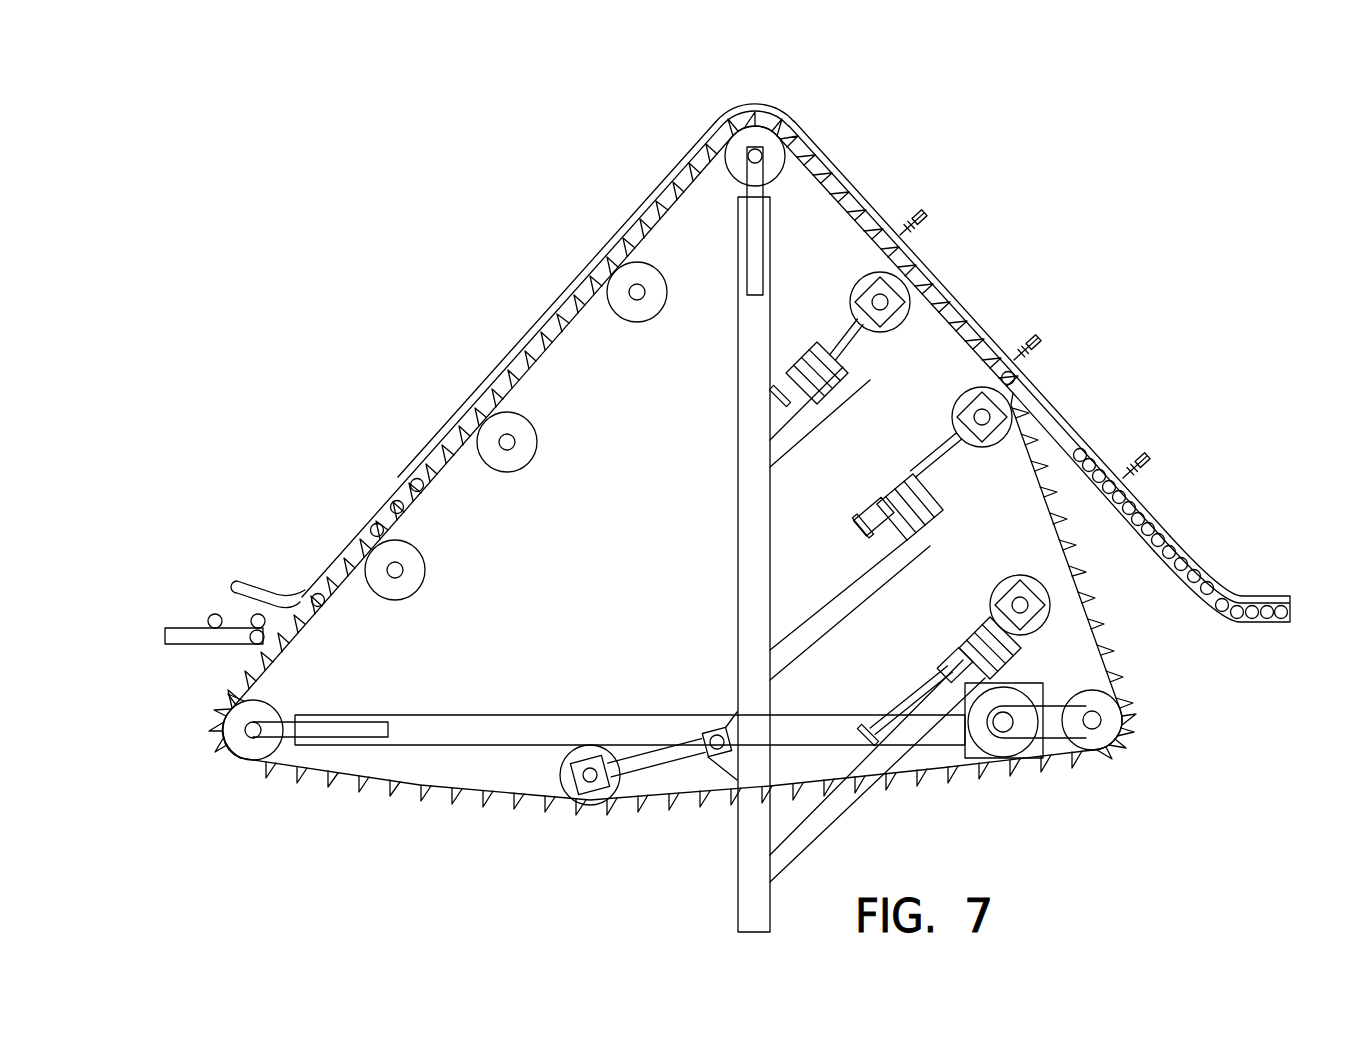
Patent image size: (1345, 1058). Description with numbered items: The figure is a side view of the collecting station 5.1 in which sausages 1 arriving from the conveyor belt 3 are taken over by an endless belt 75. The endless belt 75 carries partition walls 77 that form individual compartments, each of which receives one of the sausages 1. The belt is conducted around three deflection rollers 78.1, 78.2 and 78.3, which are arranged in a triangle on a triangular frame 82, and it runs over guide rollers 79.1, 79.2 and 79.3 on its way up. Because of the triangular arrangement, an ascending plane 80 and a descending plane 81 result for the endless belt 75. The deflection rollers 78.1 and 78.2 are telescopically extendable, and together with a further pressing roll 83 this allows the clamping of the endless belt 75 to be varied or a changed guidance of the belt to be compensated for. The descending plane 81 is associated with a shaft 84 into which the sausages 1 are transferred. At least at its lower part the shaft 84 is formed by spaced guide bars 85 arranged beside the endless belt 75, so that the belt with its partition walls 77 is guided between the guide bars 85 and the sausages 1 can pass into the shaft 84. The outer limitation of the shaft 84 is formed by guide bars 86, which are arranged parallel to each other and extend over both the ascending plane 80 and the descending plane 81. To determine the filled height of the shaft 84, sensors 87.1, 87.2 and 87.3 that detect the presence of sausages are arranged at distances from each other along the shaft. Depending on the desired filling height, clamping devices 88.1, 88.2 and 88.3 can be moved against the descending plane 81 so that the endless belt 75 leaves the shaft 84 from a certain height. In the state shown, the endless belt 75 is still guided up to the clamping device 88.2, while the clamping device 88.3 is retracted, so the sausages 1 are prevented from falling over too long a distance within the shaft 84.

The sausages 1 is at (305, 597).
The conveyor belt 3 is at (222, 648).
The collecting station 5.1 is at (1008, 278).
The endless belt 75 is at (432, 800).
The partition walls 77 is at (342, 776).
The deflection roller 78.1 is at (265, 722).
The deflection roller 78.2 is at (740, 163).
The deflection roller 78.3 is at (1122, 708).
The guide roller 79.1 is at (428, 572).
The guide roller 79.2 is at (540, 443).
The guide roller 79.3 is at (637, 323).
The ascending plane 80 is at (496, 486).
The descending plane 81 is at (888, 462).
The triangular frame 82 is at (724, 653).
The pressing roll 83 is at (585, 748).
The shaft 84 is at (1086, 412).
The guide bars 85 is at (1166, 580).
The guide bars 86 is at (1197, 555).
The sensor 87.1 is at (926, 212).
The sensor 87.2 is at (1040, 338).
The sensor 87.3 is at (1149, 456).
The clamping device 88.1 is at (876, 345).
The clamping device 88.2 is at (962, 452).
The clamping device 88.3 is at (980, 606).